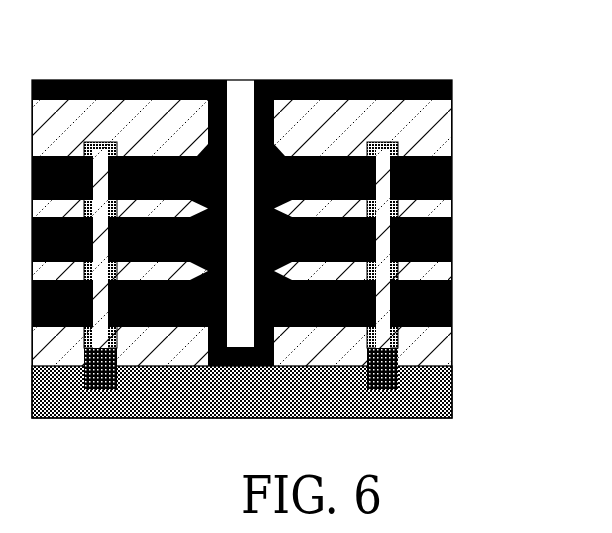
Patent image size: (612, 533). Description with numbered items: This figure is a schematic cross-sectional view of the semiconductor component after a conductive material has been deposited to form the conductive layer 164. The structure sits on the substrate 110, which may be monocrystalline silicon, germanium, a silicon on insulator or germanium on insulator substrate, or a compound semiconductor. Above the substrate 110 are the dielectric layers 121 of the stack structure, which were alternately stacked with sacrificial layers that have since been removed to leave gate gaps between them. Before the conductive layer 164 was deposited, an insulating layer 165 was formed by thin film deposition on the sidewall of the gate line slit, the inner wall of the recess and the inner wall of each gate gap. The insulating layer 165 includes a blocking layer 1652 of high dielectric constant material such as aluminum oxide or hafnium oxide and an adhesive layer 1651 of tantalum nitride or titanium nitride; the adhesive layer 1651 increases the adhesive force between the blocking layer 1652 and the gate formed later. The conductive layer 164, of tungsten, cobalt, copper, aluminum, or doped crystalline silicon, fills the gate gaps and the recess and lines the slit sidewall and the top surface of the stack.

The conductive layer 164 is at (257, 80).
The dielectric layer 121 is at (440, 210).
The blocking layer 1652 is at (452, 259).
The adhesive layer 1651 is at (452, 291).
The insulating layer 165 is at (417, 275).
The substrate 110 is at (437, 387).